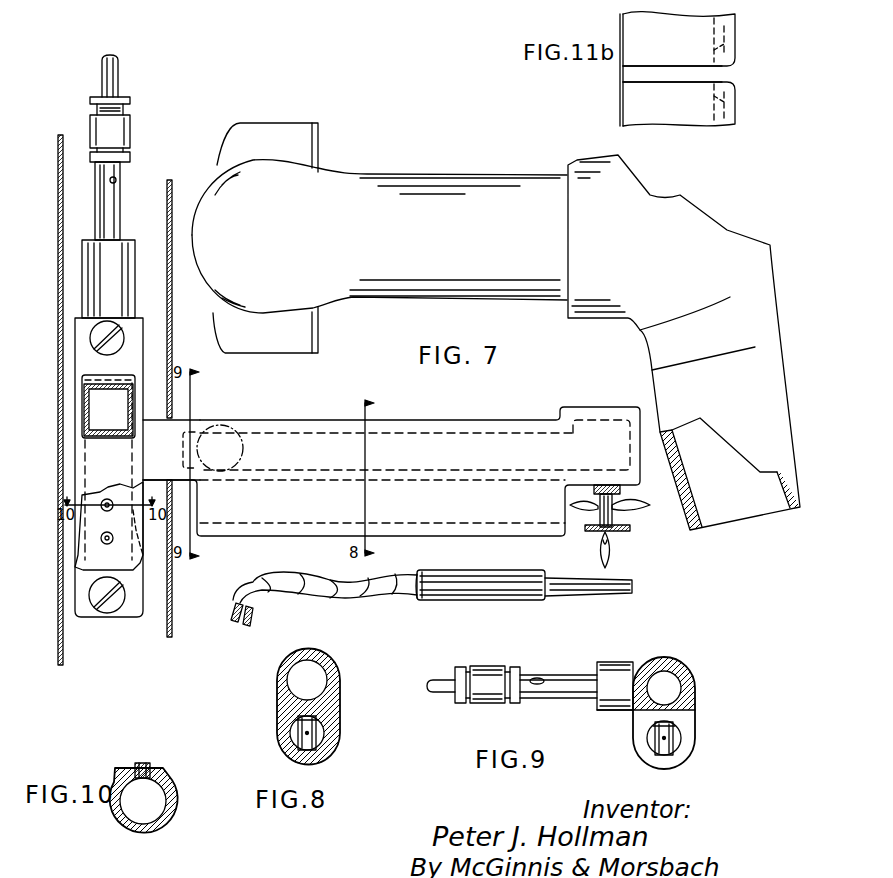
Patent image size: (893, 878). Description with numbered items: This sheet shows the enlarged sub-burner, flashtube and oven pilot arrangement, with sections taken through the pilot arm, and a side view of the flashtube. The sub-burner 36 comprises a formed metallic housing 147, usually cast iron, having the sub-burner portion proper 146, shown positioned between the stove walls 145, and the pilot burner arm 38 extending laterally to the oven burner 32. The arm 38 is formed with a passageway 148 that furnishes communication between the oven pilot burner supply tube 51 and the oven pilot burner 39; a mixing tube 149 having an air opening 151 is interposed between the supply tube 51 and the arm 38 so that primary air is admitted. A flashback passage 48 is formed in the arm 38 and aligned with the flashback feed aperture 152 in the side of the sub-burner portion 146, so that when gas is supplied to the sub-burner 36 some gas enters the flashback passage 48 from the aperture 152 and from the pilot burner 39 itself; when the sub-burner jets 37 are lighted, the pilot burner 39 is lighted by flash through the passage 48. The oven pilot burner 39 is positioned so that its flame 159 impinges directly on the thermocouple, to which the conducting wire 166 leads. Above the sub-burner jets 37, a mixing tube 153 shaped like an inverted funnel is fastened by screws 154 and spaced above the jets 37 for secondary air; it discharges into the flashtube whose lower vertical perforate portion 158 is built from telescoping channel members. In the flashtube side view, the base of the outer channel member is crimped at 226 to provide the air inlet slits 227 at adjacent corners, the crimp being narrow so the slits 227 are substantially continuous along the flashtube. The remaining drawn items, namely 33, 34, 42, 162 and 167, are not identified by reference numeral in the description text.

In FIG. 7, the oven burner 32 is at (742, 500).
In FIG. 7, the adjusting rod 33 is at (118, 80).
In FIG. 7, the rod shaft 34 is at (116, 216).
In FIG. 7, the sub-burner 36 is at (201, 411).
In FIG. 7, the sub-burner jets 37 is at (112, 541).
In FIG. 10, the sub-burner jets 37 is at (145, 763).
In FIG. 7, the pilot burner arm 38 is at (492, 443).
In FIG. 9, the pilot burner arm 38 is at (696, 705).
In FIG. 7, the oven pilot burner 39 is at (622, 528).
In FIG. 7, the cable 42 is at (350, 583).
In FIG. 7, the flashback passage 48 is at (331, 508).
In FIG. 8, the flashback passage 48 is at (323, 735).
In FIG. 9, the flashback passage 48 is at (676, 743).
In FIG. 9, the oven pilot burner supply tube 51 is at (444, 696).
In FIG. 7, the stove walls 145 is at (62, 655).
In FIG. 7, the sub-burner portion 146 is at (92, 472).
In FIG. 7, the formed metallic housing 147 is at (171, 450).
In FIG. 7, the passageway 148 is at (338, 440).
In FIG. 8, the passageway 148 is at (316, 676).
In FIG. 9, the passageway 148 is at (673, 683).
In FIG. 9, the mixing tube 149 is at (581, 690).
In FIG. 9, the air opening 151 is at (541, 678).
In FIG. 7, the flashback feed aperture 152 is at (138, 541).
In FIG. 7, the mixing tube 153 is at (88, 373).
In FIG. 7, the screws 154 is at (119, 331).
In FIG. 7, the perforate portion of flashtube 158 is at (84, 408).
In FIG. 7, the flame 159 is at (612, 553).
In FIG. 7, the cut wall 162 is at (690, 485).
In FIG. 7, the conducting wire 166 is at (233, 622).
In FIG. 7, the wire end 167 is at (268, 643).
In FIG. 11b, the crimp 226 is at (725, 73).
In FIG. 11b, the air inlet slits 227 is at (728, 44).